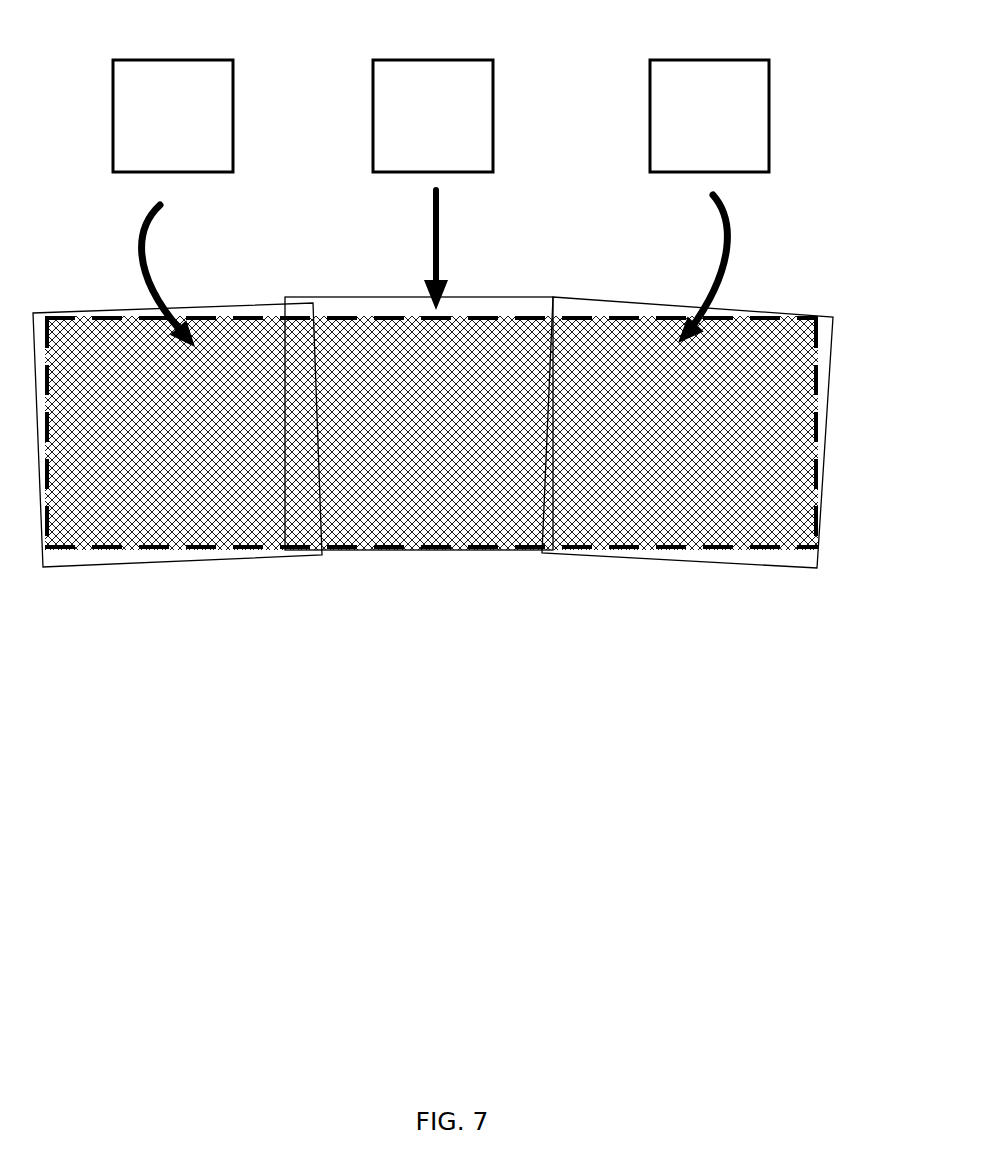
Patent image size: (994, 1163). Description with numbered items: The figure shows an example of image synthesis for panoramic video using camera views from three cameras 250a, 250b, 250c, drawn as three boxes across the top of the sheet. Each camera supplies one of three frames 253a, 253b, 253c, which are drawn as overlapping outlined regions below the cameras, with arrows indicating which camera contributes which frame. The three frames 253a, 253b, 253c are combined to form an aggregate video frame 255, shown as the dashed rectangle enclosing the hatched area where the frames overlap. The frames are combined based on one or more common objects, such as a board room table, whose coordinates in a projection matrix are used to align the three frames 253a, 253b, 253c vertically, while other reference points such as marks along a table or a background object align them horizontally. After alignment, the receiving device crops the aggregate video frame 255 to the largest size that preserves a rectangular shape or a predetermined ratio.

The camera 250a is at (148, 60).
The camera 250b is at (393, 60).
The camera 250c is at (680, 60).
The frame 253a is at (95, 312).
The frame 253b is at (345, 297).
The frame 253c is at (627, 303).
The aggregate video frame 255 is at (205, 550).